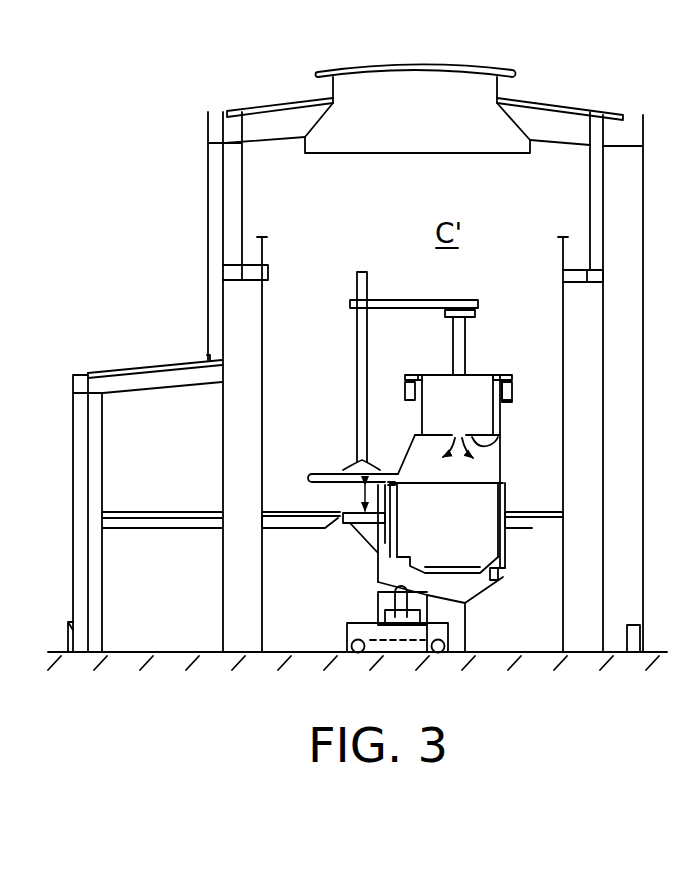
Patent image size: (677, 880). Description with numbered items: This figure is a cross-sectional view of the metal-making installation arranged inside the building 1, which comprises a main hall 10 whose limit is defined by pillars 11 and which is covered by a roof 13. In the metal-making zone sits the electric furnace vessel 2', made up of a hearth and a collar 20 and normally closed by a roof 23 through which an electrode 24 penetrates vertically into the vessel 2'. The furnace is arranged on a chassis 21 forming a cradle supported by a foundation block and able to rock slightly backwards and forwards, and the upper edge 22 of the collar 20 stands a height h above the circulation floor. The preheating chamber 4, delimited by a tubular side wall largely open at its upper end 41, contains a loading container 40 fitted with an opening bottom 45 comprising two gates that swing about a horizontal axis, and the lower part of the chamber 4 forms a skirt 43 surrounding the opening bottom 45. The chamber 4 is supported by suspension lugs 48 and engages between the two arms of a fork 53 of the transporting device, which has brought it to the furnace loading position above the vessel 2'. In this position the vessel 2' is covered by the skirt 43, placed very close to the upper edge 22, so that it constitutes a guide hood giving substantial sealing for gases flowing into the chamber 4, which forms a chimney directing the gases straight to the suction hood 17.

The building 1 is at (190, 198).
The main hall 10 is at (277, 342).
The pillars 11 is at (635, 200).
The roof 13 is at (550, 100).
The suction hood 17 is at (317, 122).
The collar 20 is at (505, 543).
The chassis 21 is at (475, 582).
The upper edge 22 is at (455, 487).
The roof 23 is at (327, 473).
The electrode 24 is at (355, 410).
The loading container 40 is at (468, 376).
The upper end 41 is at (463, 390).
The skirt 43 is at (502, 457).
The opening bottom 45 is at (498, 440).
The suspension lugs 48 is at (408, 375).
The fork 53 is at (512, 380).
The preheating chamber 4 is at (518, 402).
The vessel 2' is at (524, 591).